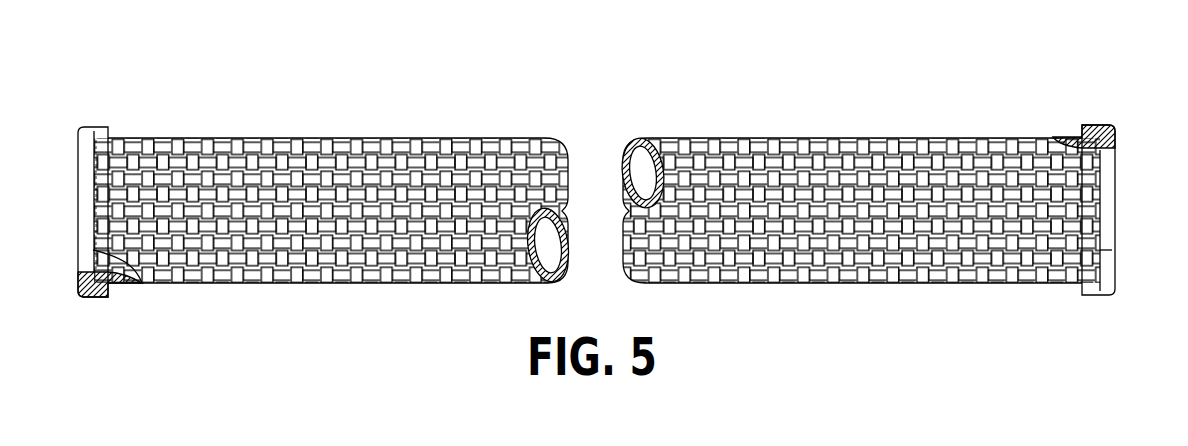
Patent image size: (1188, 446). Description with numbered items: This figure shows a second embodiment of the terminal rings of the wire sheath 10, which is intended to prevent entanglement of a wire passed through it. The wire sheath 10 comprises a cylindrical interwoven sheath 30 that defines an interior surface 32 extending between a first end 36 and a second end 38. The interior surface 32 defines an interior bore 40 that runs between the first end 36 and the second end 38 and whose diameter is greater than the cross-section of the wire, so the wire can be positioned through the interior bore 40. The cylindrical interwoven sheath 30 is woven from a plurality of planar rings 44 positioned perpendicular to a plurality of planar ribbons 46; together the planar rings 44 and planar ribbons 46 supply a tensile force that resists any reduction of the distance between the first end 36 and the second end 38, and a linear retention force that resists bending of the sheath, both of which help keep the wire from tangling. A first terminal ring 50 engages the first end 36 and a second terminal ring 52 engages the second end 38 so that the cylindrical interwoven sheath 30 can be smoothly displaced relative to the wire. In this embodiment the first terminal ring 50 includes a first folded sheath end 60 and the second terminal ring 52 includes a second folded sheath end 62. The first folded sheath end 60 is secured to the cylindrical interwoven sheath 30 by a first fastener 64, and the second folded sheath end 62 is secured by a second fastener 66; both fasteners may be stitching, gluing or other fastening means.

The wire sheath 10 is at (322, 46).
The cylindrical interwoven sheath 30 is at (598, 215).
The interior surface 32 is at (128, 285).
The first end 36 is at (1072, 238).
The second end 38 is at (120, 200).
The interior bore 40 is at (553, 253).
The planar rings 44 is at (598, 215).
The planar ribbons 46 is at (738, 255).
The first terminal ring 50 is at (1114, 234).
The second terminal ring 52 is at (84, 236).
The first folded sheath end 60 is at (1105, 208).
The second folded sheath end 62 is at (88, 200).
The first fastener 64 is at (1105, 250).
The second fastener 66 is at (112, 255).